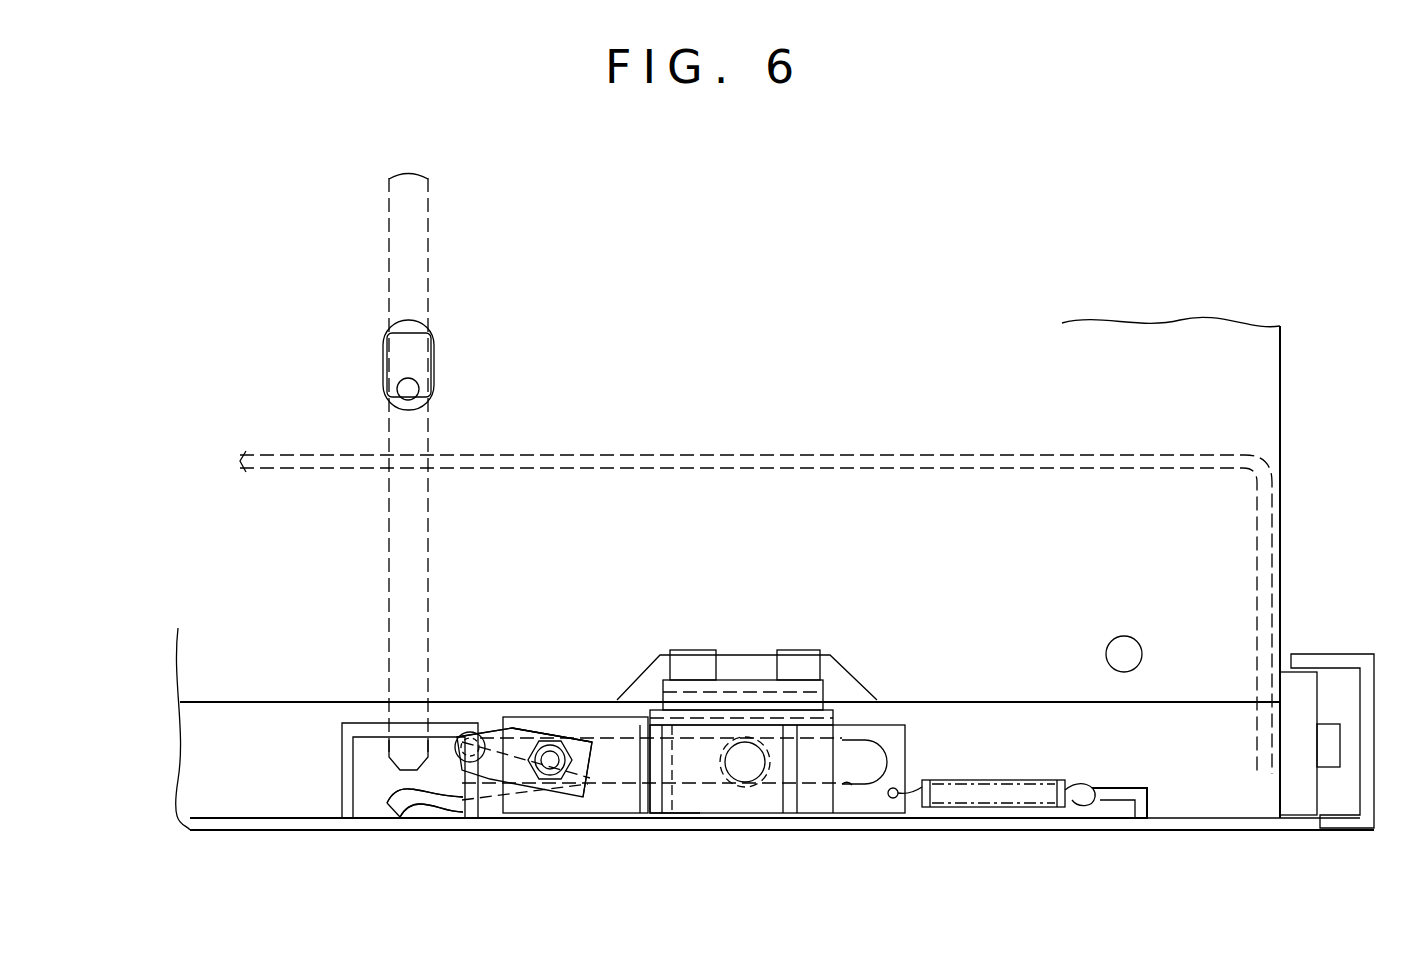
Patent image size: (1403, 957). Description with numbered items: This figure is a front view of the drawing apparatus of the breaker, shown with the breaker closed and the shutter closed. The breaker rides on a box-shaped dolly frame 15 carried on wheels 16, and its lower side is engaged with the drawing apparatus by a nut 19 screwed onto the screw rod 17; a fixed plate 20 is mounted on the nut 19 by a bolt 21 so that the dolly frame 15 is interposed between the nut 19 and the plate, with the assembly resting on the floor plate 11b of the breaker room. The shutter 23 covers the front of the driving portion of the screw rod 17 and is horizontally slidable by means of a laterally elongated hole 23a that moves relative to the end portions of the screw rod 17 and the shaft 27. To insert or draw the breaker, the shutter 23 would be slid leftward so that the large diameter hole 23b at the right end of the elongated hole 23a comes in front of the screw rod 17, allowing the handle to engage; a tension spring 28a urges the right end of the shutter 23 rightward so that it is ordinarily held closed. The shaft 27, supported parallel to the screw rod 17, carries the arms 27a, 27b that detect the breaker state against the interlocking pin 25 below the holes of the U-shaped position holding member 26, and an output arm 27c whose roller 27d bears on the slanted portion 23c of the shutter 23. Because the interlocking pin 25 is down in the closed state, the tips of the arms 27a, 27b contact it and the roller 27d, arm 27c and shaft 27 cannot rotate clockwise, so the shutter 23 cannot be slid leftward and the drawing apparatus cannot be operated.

The bottom plate of chassis 11b is at (1250, 830).
The dolly frame 15 is at (1247, 455).
The wheels 16 is at (1320, 690).
The screw rod 17 is at (748, 783).
The nut 19 is at (662, 796).
The fixed plate 20 is at (823, 688).
The bolt 21 is at (694, 650).
The shutter 23 is at (893, 802).
The laterally elongated hole 23a is at (696, 772).
The large diameter hole 23b is at (862, 790).
The slanted portion 23c is at (526, 705).
The interlocking pin 25 is at (389, 292).
The position holding member 26 is at (342, 780).
The shaft 27 is at (553, 778).
The arm 27a is at (437, 808).
The arm 27b is at (437, 808).
The arm 27c is at (522, 727).
The roller 27d is at (478, 738).
The tension spring 28a is at (1022, 815).